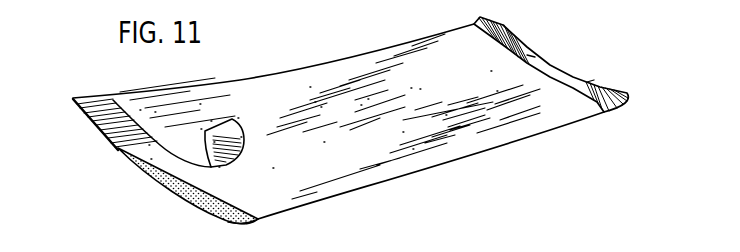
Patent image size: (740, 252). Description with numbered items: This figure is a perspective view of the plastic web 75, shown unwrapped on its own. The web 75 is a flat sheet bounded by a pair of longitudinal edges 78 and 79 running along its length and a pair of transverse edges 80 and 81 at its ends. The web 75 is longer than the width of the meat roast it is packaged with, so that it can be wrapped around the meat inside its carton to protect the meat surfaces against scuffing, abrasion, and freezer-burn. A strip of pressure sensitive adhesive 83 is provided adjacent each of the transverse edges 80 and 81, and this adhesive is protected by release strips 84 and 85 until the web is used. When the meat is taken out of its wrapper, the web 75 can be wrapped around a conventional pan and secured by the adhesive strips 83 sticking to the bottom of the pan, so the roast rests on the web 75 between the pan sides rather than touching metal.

The plastic web 75 is at (506, 138).
The longitudinal edge 78 is at (300, 67).
The longitudinal edge 79 is at (387, 183).
The transverse edge 80 is at (577, 63).
The transverse edge 81 is at (175, 197).
The strip of pressure sensitive adhesive 83 is at (238, 223).
The release strip 84 is at (140, 141).
The release strip 85 is at (536, 51).